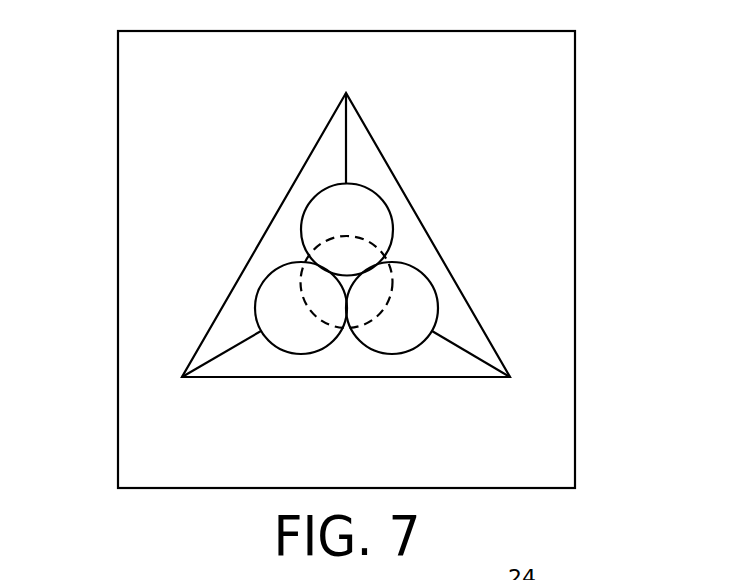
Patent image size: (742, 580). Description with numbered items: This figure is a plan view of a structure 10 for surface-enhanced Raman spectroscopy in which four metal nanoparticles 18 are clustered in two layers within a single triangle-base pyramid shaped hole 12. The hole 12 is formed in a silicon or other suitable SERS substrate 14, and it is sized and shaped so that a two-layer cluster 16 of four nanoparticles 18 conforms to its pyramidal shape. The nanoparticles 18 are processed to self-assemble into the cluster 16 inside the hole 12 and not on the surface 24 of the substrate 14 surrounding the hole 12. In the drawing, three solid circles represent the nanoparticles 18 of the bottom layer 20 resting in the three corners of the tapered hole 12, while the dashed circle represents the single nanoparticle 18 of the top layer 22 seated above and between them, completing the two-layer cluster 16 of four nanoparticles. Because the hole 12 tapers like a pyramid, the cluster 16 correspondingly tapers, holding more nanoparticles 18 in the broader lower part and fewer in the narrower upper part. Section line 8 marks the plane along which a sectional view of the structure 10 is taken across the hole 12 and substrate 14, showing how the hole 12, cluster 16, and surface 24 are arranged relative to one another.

The section line 8- 8 is at (118, 282).
The structure 10 is at (610, 69).
The hole 12 is at (410, 233).
The SERS substrate 14 is at (565, 189).
The cluster 16 is at (368, 179).
The metal nanoparticles 18 is at (300, 280).
The bottom layer 20 is at (372, 322).
The top layer 22 is at (306, 352).
The surface 24 is at (513, 266).